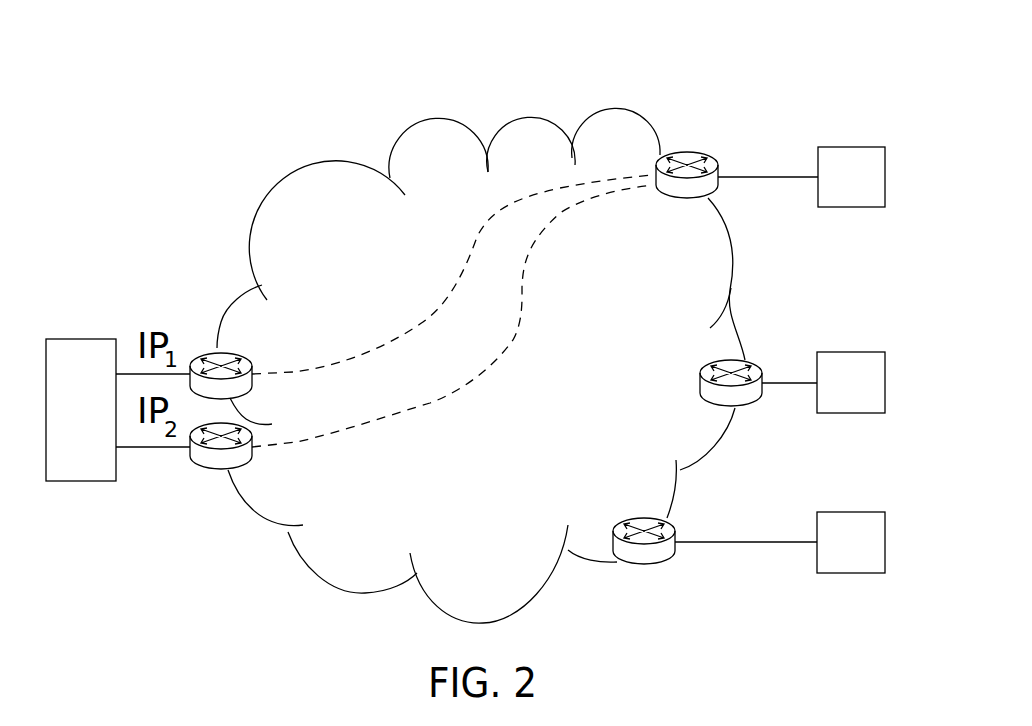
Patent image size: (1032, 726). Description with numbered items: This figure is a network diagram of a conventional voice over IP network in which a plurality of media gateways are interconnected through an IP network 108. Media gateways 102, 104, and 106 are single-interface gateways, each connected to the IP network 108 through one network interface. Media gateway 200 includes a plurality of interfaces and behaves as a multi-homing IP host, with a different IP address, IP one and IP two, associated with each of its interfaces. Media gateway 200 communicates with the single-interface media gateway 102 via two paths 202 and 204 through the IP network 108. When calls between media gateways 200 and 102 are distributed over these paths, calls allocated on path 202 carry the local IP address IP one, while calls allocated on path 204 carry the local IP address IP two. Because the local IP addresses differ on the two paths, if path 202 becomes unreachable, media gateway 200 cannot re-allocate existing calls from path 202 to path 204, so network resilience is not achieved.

The media gateway 102 is at (853, 146).
The media gateway 104 is at (852, 350).
The media gateway 106 is at (852, 510).
The IP network 108 is at (317, 167).
The media gateway 200 is at (82, 338).
The path 202 is at (321, 368).
The path 204 is at (342, 432).